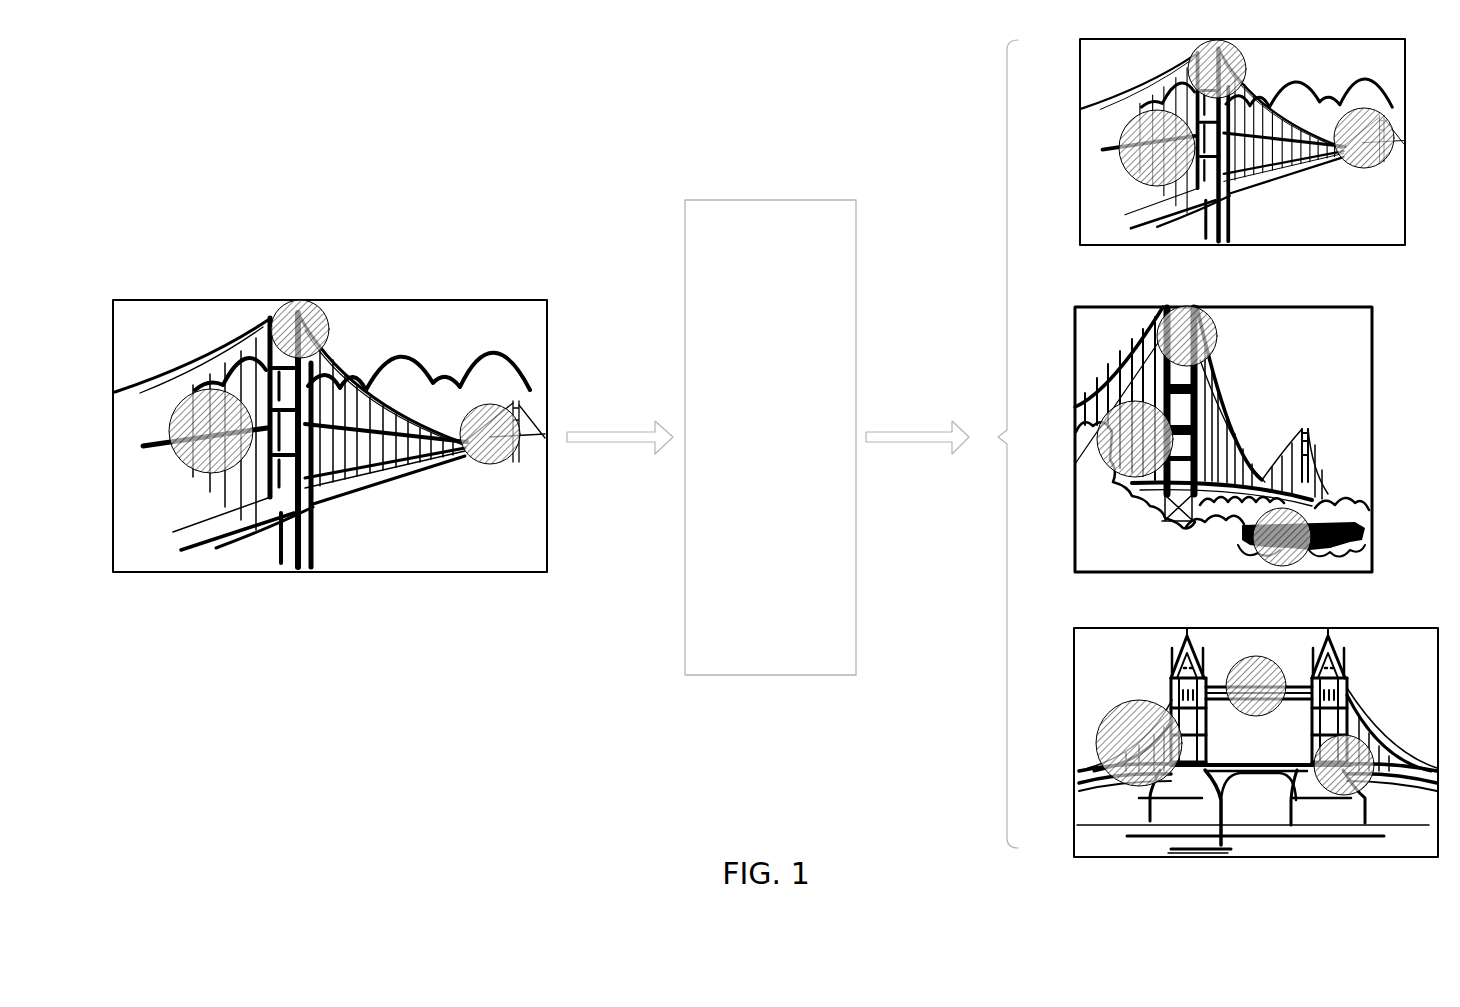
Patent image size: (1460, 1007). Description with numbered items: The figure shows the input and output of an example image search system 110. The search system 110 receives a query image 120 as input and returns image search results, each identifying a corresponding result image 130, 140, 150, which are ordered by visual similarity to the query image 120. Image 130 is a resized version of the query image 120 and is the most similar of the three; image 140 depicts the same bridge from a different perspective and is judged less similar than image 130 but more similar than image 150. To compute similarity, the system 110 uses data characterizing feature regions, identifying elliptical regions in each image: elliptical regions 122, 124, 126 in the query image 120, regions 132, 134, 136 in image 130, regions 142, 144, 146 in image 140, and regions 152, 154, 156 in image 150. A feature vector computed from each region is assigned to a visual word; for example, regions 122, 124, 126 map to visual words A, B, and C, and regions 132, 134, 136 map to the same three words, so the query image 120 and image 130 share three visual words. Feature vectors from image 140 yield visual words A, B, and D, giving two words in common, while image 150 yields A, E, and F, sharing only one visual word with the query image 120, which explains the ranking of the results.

The image search system 110 is at (770, 437).
The query image 120 is at (330, 438).
The elliptical region 122 is at (180, 396).
The elliptical region 124 is at (323, 330).
The elliptical region 126 is at (490, 465).
The result image 130 is at (1242, 151).
The elliptical region 132 is at (1137, 110).
The elliptical region 134 is at (1237, 52).
The elliptical region 136 is at (1361, 168).
The result image 140 is at (1197, 459).
The elliptical region 142 is at (1099, 459).
The elliptical region 144 is at (1218, 340).
The elliptical region 146 is at (1256, 562).
The result image 150 is at (1256, 752).
The elliptical region 152 is at (1141, 700).
The elliptical region 154 is at (1245, 657).
The elliptical region 156 is at (1361, 742).